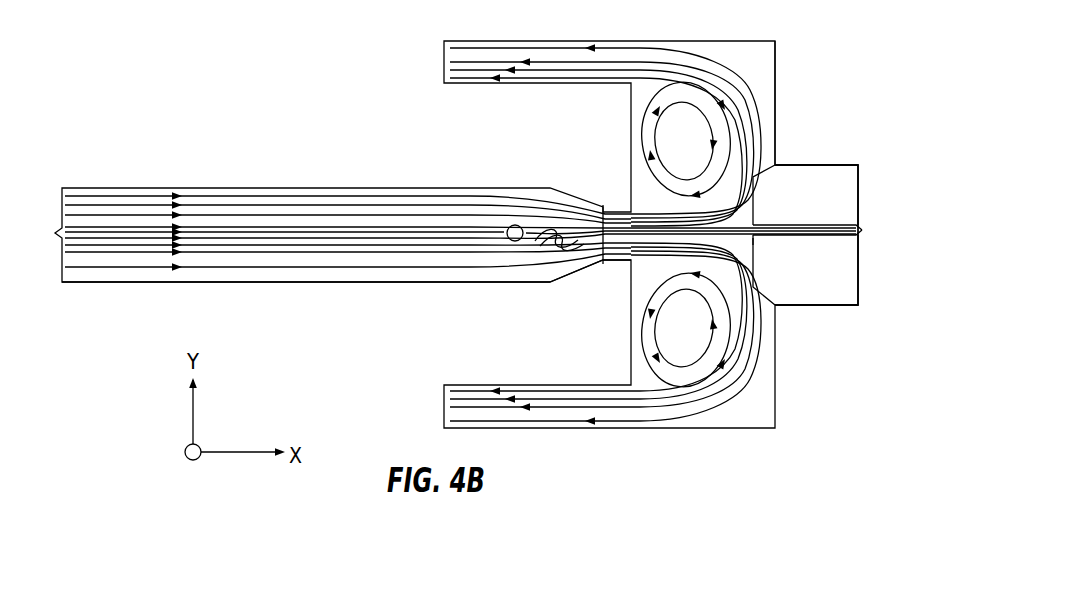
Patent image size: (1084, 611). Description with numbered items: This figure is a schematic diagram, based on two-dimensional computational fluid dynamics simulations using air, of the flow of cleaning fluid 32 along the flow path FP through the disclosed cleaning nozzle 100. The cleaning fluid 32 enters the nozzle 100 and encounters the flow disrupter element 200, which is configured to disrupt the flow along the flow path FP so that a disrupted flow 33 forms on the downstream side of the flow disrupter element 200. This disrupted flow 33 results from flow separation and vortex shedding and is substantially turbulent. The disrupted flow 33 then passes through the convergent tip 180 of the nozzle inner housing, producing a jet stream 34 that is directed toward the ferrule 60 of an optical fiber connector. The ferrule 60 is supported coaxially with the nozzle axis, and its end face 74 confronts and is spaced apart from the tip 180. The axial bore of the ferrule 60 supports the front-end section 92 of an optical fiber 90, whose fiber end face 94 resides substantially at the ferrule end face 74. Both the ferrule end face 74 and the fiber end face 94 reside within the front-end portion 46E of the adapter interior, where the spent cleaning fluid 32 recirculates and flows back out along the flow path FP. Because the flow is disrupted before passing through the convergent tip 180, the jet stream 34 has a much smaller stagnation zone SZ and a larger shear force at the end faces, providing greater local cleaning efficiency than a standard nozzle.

The cleaning nozzle 100 is at (158, 96).
The cleaning fluid 32 is at (261, 213).
The disrupted flow 33 is at (510, 269).
The jet stream 34 is at (626, 260).
The flow disrupter element 200 is at (512, 226).
The convergent tip 180 is at (613, 172).
The front-end portion 46E is at (759, 72).
The end face 74 is at (755, 185).
The ferrule 60 is at (835, 146).
The optical fiber 90 is at (807, 216).
The front-end section 92 is at (822, 228).
The fiber end face 94 is at (758, 233).
The stagnation zone SZ is at (755, 240).
The flow path FP is at (476, 182).